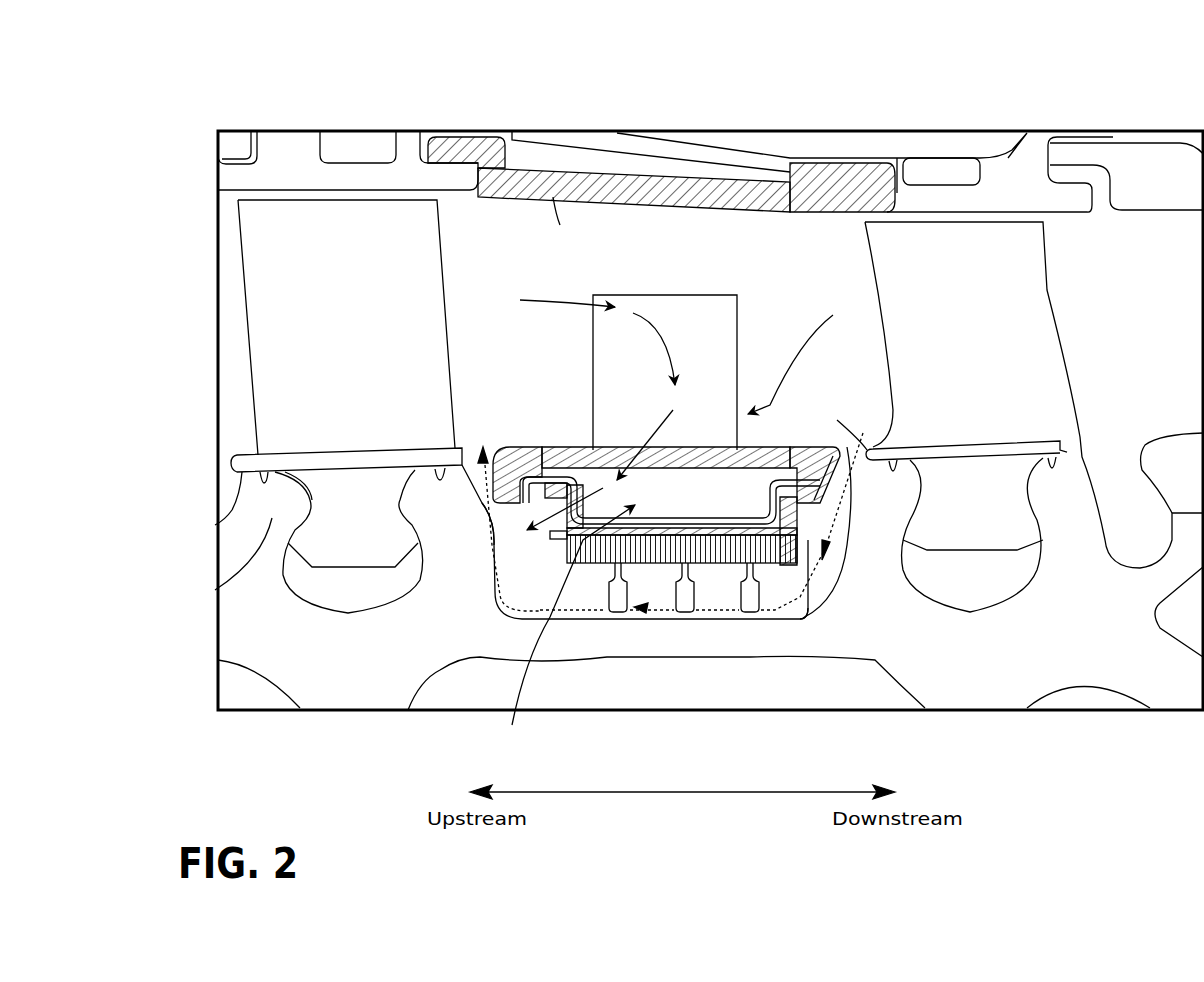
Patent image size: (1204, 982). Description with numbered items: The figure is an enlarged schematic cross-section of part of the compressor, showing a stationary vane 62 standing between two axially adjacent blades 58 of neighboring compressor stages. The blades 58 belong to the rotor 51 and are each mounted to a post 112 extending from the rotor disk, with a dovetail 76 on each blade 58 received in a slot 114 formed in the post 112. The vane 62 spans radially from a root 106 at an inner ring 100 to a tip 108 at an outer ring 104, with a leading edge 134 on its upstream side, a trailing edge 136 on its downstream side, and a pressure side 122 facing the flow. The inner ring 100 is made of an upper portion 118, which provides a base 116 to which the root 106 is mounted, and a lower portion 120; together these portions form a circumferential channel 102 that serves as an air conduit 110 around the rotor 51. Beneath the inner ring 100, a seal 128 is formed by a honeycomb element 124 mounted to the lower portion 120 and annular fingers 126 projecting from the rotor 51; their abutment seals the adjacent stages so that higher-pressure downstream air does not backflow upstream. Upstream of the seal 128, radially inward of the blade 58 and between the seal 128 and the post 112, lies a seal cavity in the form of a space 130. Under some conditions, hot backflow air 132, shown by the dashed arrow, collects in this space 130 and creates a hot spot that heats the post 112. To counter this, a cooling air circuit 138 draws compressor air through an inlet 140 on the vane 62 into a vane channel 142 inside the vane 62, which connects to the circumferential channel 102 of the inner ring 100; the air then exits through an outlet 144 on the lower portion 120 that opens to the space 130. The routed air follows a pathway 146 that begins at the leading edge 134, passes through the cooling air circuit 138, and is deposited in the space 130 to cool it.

The rotor 51 is at (908, 655).
The blades 58 is at (277, 293).
The vane 62 is at (750, 237).
The dovetail 76 is at (342, 487).
The inner ring 100 is at (868, 450).
The circumferential channel 102 is at (562, 627).
The outer ring 104 is at (837, 165).
The root 106 is at (583, 447).
The tip 108 is at (557, 447).
The air conduit 110 is at (705, 499).
The post 112 is at (440, 512).
The slot 114 is at (348, 595).
The base 116 is at (805, 450).
The upper portion 118 is at (808, 482).
The lower portion 120 is at (815, 574).
The pressure side 122 is at (630, 260).
The honeycomb element 124 is at (657, 555).
The annular fingers 126 is at (617, 585).
The seal 128 is at (825, 585).
The space 130 is at (543, 507).
The backflow air 132 is at (480, 470).
The leading edge 134 is at (558, 235).
The trailing edge 136 is at (860, 263).
The cooling air circuit 138 is at (840, 447).
The inlet 140 is at (703, 295).
The vane channel 142 is at (797, 396).
The outlet 144 is at (493, 518).
The pathway 146 is at (555, 305).